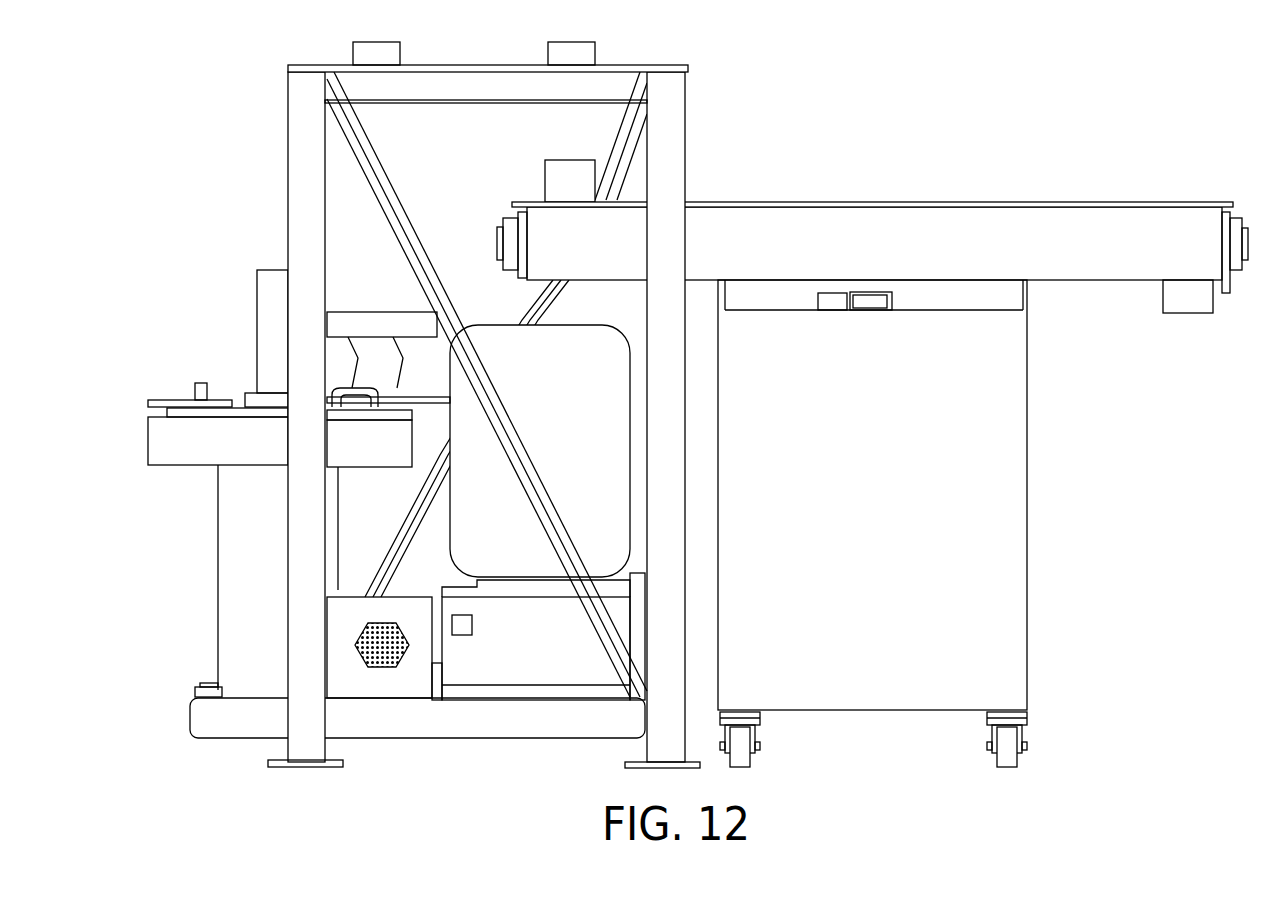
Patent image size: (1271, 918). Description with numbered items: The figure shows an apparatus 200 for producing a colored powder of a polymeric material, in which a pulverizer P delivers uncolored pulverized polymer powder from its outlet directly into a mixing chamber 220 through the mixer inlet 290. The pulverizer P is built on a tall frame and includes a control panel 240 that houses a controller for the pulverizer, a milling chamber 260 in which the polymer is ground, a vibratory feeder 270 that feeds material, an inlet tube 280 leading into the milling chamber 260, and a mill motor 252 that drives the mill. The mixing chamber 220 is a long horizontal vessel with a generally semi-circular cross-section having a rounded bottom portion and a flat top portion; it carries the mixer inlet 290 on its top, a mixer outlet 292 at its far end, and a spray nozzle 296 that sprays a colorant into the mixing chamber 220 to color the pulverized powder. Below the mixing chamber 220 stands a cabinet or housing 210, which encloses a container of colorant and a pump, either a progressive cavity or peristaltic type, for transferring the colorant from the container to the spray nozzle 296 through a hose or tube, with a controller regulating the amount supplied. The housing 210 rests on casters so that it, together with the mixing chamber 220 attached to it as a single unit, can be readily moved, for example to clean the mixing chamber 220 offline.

The pulverizer P is at (228, 136).
The apparatus 200 is at (1056, 134).
The housing 210 is at (1015, 462).
The mixing chamber 220 is at (897, 203).
The control panel 240 is at (482, 175).
The mill motor 252 is at (582, 401).
The milling chamber 260 is at (237, 547).
The vibratory feeder 270 is at (372, 317).
The inlet tube 280 is at (257, 310).
The mixer inlet 290 is at (563, 158).
The mixer outlet 292 is at (1197, 317).
The spray nozzle 296 is at (602, 158).